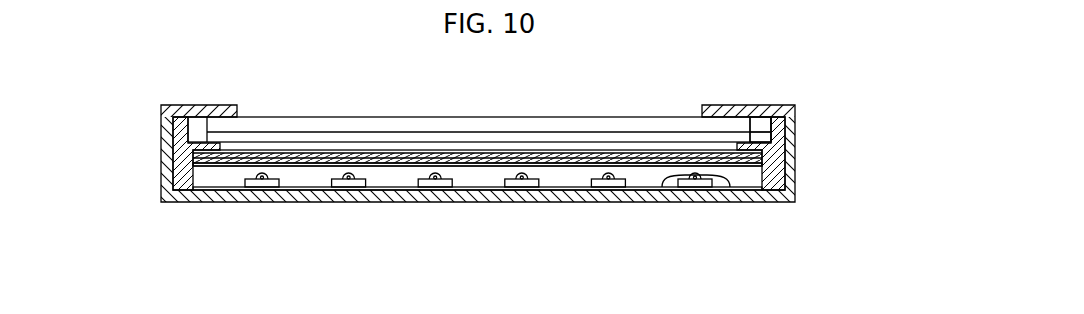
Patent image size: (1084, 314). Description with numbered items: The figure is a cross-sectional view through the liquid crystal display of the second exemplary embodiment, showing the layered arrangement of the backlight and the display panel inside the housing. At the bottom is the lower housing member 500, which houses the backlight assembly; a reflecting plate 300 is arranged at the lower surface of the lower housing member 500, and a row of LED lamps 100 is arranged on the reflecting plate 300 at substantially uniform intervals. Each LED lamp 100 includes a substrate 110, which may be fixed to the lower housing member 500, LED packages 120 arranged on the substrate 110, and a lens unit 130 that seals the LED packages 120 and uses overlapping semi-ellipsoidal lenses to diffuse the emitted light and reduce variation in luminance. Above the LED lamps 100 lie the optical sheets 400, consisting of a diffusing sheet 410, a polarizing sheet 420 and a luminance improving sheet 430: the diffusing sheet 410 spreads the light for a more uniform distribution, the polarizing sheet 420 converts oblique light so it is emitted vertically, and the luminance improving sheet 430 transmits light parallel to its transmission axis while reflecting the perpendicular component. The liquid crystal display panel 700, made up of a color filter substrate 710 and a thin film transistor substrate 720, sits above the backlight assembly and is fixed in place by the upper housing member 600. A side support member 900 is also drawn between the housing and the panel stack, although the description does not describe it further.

The LED lamp 100 is at (704, 227).
The substrate 110 is at (730, 186).
The LED package 120 is at (698, 187).
The lens unit 130 is at (684, 211).
The reflecting plate 300 is at (562, 190).
The optical sheets 400 is at (547, 174).
The diffusing sheet 410 is at (762, 165).
The polarizing sheet 420 is at (762, 160).
The luminance improving sheet 430 is at (762, 156).
The lower housing member 500 is at (178, 197).
The upper housing member 600 is at (175, 132).
The liquid crystal display panel 700 is at (825, 121).
The color filter substrate 710 is at (750, 125).
The thin film transistor substrate 720 is at (750, 136).
The side support member 900 is at (183, 170).